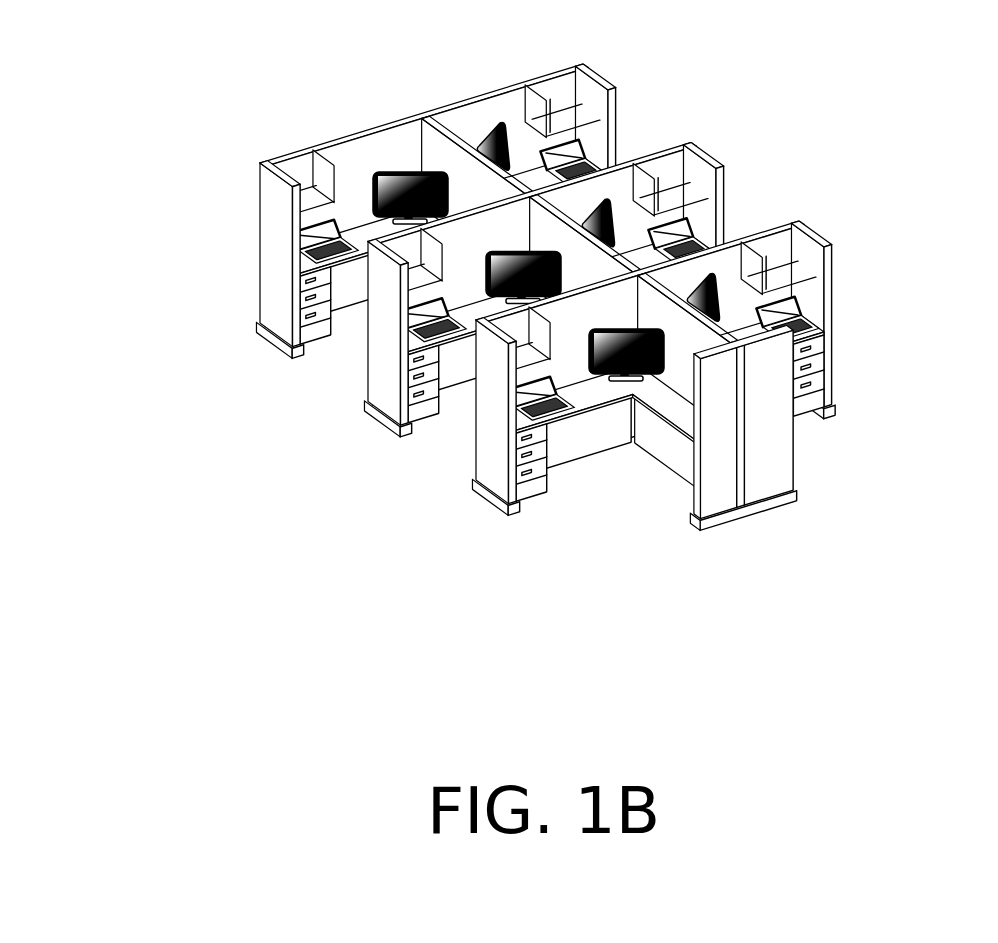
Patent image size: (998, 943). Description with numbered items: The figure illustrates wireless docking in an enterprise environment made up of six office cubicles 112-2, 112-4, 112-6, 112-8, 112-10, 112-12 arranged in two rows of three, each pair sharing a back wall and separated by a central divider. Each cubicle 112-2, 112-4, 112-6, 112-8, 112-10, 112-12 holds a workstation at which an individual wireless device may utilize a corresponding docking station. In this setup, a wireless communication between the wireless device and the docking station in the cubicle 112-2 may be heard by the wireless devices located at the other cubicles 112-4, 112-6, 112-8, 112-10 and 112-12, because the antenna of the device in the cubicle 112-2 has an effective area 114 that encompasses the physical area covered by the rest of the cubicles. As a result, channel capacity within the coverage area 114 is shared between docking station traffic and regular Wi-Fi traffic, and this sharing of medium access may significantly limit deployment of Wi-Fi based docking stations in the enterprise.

The effective area 114 is at (218, 79).
The cubicle 112-2 is at (265, 337).
The cubicle 112-4 is at (368, 404).
The cubicle 112-6 is at (478, 484).
The cubicle 112-8 is at (616, 128).
The cubicle 112-10 is at (724, 208).
The cubicle 112-12 is at (832, 286).